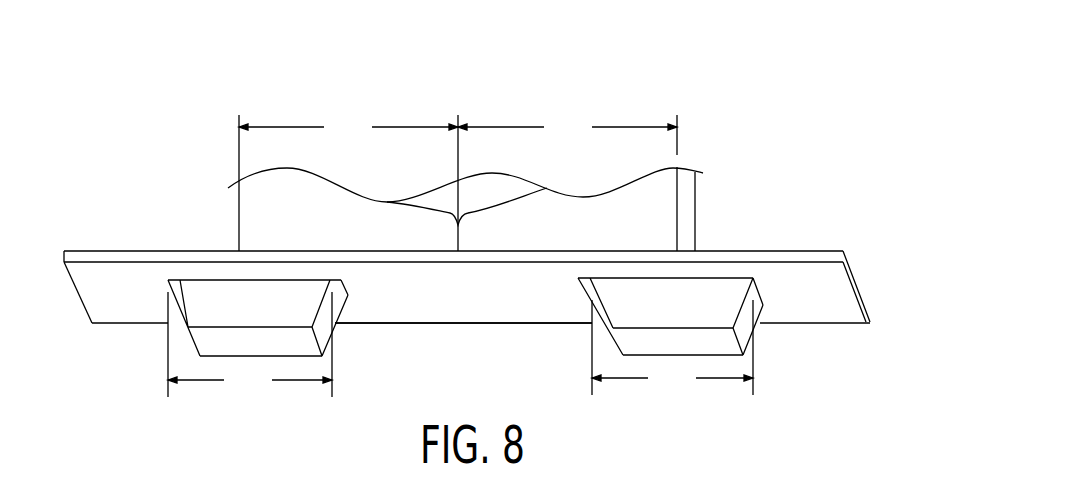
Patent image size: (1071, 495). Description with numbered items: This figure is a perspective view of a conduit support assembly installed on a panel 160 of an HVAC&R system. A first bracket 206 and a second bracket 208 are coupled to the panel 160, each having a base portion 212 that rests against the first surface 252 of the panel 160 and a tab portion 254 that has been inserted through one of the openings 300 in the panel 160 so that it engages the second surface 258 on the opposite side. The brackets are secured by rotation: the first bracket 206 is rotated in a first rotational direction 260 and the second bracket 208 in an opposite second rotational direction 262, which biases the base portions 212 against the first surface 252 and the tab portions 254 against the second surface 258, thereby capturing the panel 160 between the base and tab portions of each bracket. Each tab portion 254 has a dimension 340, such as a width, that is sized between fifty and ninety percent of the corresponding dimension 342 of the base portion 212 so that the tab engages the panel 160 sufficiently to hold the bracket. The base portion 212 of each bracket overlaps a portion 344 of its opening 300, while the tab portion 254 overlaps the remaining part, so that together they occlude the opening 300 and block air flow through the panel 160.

The panel 160 is at (88, 250).
The first bracket 206 is at (783, 152).
The second bracket 208 is at (155, 155).
The base portion 212 is at (217, 213).
The first surface 252 is at (147, 250).
The tab portion 254 is at (202, 300).
The second surface 258 is at (457, 307).
The first rotational direction 260 is at (715, 102).
The second rotational direction 262 is at (252, 88).
The opening 300 is at (342, 330).
The dimension of the tab portion 340 is at (460, 344).
The dimension of the base portion 342 is at (458, 181).
The portion of the opening 344 is at (347, 303).